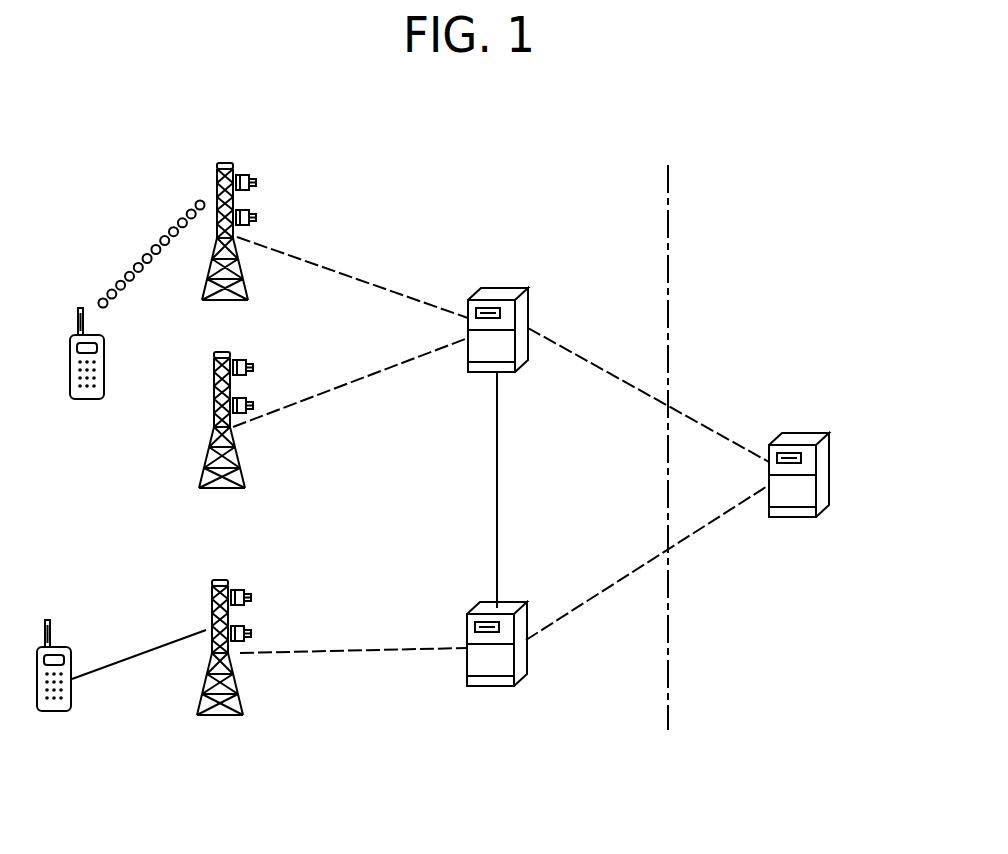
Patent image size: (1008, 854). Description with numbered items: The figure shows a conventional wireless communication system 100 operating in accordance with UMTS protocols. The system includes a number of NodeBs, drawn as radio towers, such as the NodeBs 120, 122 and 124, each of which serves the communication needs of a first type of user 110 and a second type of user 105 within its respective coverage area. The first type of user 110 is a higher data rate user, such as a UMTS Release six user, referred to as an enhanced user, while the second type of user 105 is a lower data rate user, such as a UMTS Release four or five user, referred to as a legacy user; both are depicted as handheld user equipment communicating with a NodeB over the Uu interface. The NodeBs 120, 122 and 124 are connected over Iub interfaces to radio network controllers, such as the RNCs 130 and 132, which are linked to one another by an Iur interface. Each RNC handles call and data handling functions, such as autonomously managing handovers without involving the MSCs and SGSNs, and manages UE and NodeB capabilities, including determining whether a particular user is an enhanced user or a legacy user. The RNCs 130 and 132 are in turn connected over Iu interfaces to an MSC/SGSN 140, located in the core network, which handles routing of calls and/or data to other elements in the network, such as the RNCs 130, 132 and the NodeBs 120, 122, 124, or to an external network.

The wireless communication system 100 is at (462, 180).
The second type of user 105 is at (104, 353).
The first type of user 110 is at (65, 645).
The NodeB 120 is at (257, 165).
The NodeB 122 is at (269, 357).
The NodeB 124 is at (249, 582).
The RNC 130 is at (530, 306).
The RNC 132 is at (520, 603).
The MSC/SGSN 140 is at (797, 432).